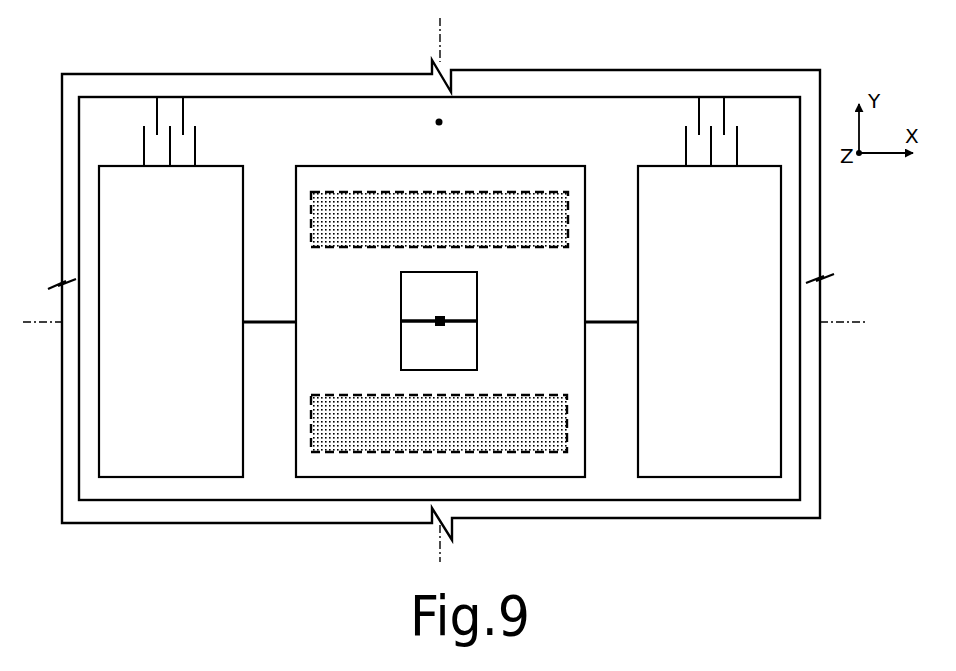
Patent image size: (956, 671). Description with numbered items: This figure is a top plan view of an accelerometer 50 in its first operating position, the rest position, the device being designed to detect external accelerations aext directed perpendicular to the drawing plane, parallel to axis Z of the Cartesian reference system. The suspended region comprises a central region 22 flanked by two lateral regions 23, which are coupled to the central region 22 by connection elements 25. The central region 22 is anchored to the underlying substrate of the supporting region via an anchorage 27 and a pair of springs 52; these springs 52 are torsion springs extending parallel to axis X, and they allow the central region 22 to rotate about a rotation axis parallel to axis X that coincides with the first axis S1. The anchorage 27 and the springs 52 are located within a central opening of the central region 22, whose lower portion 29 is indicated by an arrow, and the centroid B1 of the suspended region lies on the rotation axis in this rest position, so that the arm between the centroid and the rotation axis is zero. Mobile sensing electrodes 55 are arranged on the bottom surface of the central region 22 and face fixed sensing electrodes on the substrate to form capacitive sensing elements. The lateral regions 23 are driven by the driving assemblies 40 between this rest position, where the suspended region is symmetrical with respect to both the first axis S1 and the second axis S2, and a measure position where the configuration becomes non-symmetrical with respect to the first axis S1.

The accelerometer 50 is at (833, 95).
The driving assemblies 40 is at (136, 136).
The lateral regions 23 is at (137, 203).
The central region 22 is at (349, 344).
The connections 25 is at (258, 320).
The mobile sensing electrodes 55 is at (542, 202).
The anchorage 27 is at (441, 315).
The springs 52 is at (415, 318).
The lower portion 29 is at (407, 351).
The point B1 is at (446, 318).
The second axis S2 is at (442, 42).
The first axis S1 is at (836, 321).
The external acceleration a_ext aext is at (442, 122).